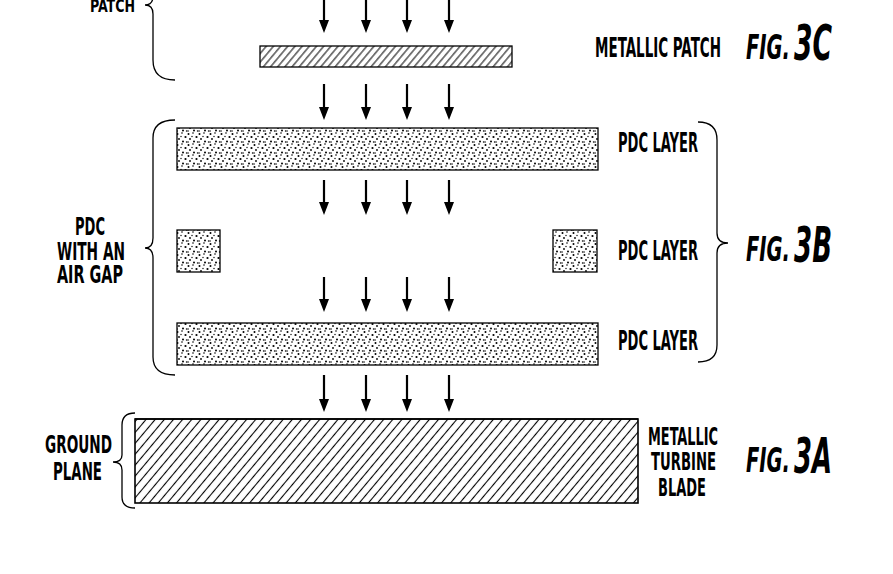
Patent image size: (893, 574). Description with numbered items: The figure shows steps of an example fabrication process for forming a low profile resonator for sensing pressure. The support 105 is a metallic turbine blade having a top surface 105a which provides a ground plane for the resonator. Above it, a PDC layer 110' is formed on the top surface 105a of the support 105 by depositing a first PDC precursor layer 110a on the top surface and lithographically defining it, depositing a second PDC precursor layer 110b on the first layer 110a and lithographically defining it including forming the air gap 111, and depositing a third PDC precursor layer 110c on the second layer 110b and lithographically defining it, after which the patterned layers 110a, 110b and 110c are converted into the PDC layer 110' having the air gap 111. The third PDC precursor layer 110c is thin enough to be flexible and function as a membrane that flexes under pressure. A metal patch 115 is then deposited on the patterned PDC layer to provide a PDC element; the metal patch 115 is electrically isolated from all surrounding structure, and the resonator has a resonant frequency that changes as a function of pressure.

In FIG. 3C, the metal patch 115 is at (260, 61).
In FIG. 3B, the third PDC precursor layer 110c is at (269, 127).
In FIG. 3B, the second PDC precursor layer 110b is at (220, 243).
In FIG. 3B, the first PDC precursor layer 110a is at (193, 323).
In FIG. 3B, the PDC layer 110' is at (129, 247).
In FIG. 3B, the air gap 111 is at (390, 243).
In FIG. 3A, the top surface 105a is at (145, 418).
In FIG. 3A, the support 105 is at (166, 500).